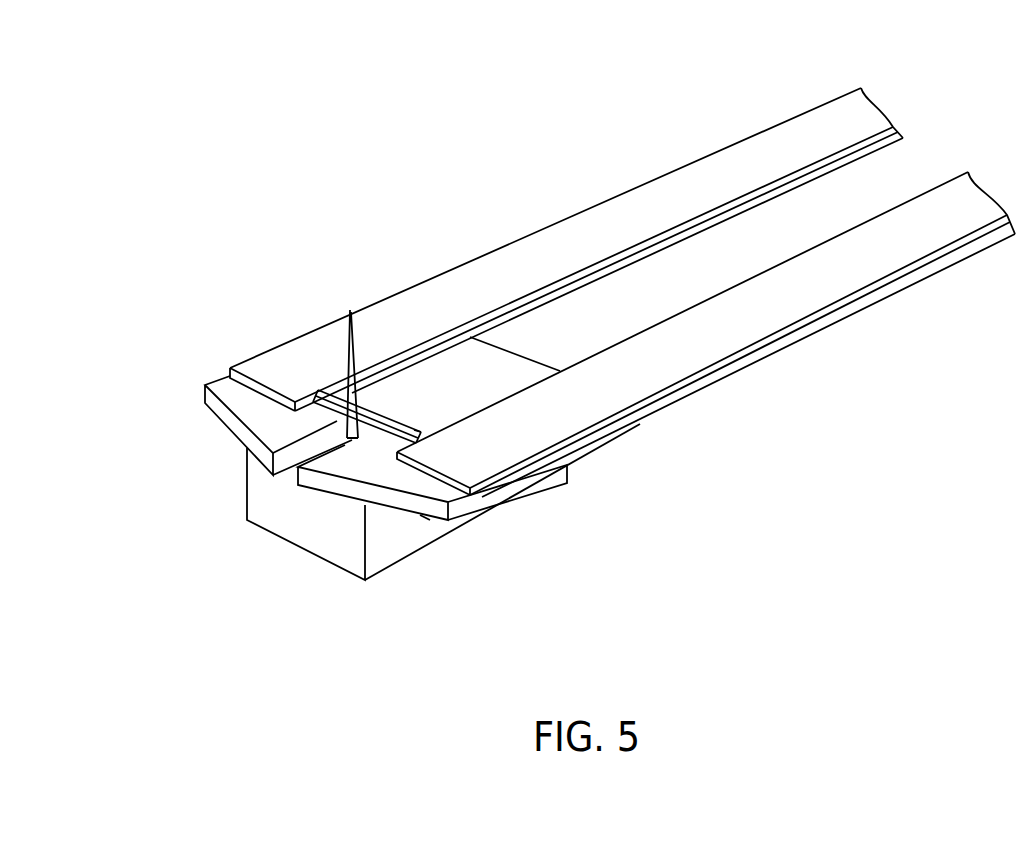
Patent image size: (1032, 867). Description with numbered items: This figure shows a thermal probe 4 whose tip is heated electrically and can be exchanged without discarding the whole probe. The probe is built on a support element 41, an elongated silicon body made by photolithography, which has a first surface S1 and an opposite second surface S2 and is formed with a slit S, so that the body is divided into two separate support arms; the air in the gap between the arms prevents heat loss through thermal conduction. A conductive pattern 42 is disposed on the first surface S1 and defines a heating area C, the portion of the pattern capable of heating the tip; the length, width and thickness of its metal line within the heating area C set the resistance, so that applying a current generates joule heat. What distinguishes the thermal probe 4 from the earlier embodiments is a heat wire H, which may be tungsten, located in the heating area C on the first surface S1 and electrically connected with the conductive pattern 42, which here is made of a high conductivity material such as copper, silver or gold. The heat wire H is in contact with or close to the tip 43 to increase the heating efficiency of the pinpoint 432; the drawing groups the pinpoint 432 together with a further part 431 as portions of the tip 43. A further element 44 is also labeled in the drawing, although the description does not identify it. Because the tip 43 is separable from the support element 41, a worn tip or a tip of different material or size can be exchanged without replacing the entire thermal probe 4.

The thermal probe 4 is at (136, 110).
The support element 41 is at (688, 388).
The conductive pattern 42 is at (558, 240).
The tip 43 is at (151, 303).
The clamp block 431 is at (247, 483).
The pinpoint 432 is at (347, 337).
The base plate 44 is at (590, 448).
The slit S is at (328, 430).
The first surface S1 is at (452, 362).
The second surface S2 is at (425, 515).
The heating area C is at (388, 404).
The heat wire H is at (414, 430).